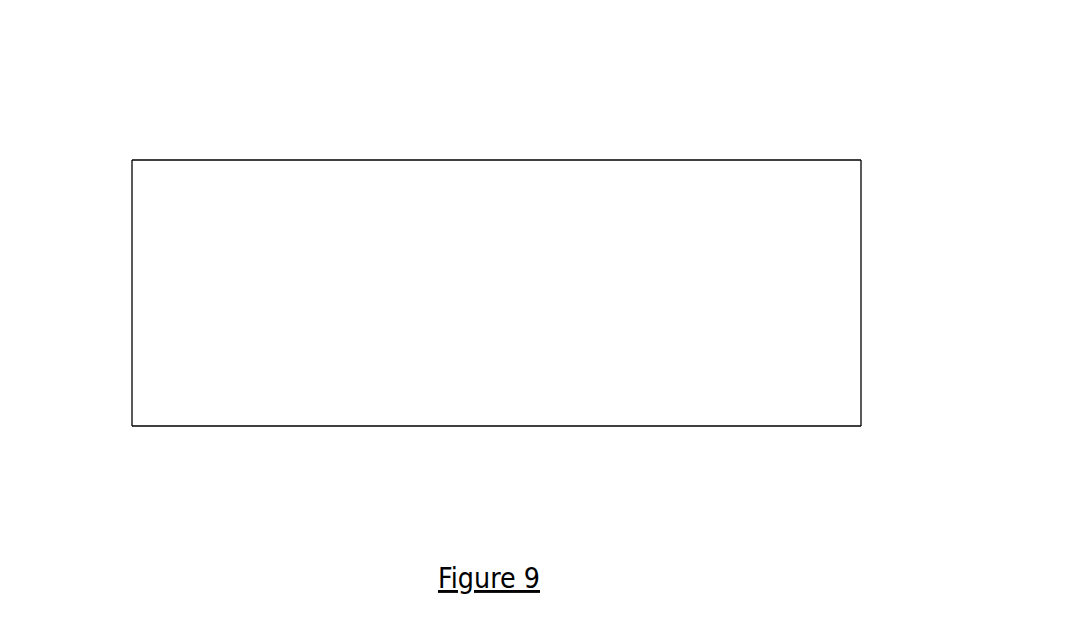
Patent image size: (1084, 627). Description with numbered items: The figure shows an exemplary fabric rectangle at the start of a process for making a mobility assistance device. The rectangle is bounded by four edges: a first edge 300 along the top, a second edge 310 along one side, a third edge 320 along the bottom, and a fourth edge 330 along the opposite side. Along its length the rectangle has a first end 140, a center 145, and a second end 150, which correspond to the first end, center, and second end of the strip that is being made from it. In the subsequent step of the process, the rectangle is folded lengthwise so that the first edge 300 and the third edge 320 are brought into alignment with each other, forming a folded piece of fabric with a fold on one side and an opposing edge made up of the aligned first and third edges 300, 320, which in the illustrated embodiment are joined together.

The first edge 300 is at (402, 160).
The second edge 310 is at (862, 313).
The third edge 320 is at (496, 505).
The fourth edge 330 is at (132, 283).
The first end 140 is at (166, 293).
The center 145 is at (480, 305).
The second end 150 is at (838, 292).